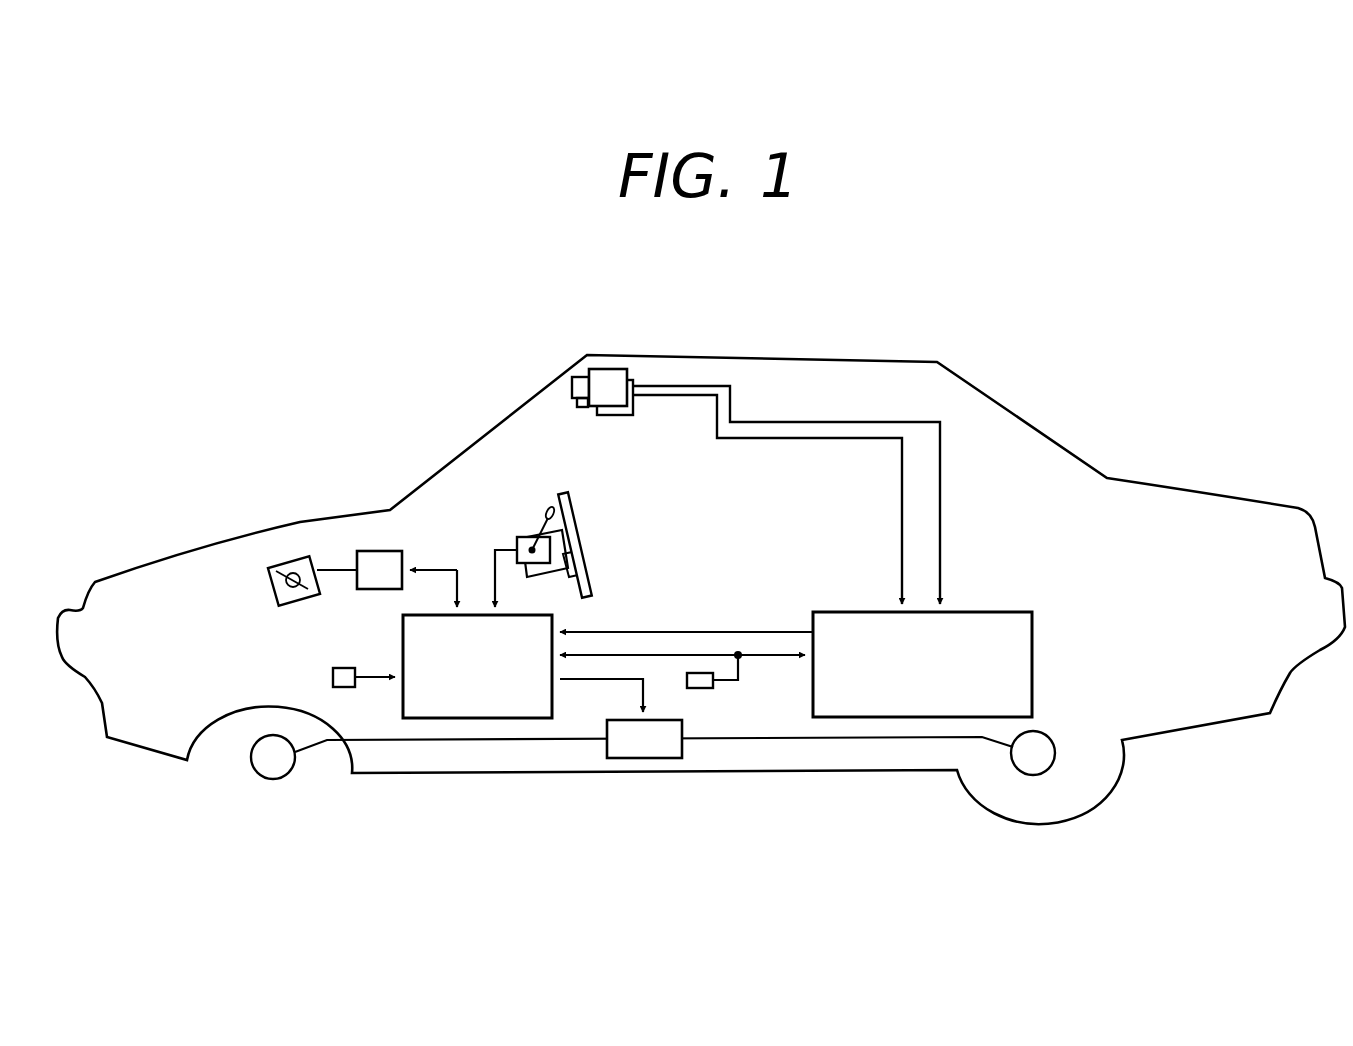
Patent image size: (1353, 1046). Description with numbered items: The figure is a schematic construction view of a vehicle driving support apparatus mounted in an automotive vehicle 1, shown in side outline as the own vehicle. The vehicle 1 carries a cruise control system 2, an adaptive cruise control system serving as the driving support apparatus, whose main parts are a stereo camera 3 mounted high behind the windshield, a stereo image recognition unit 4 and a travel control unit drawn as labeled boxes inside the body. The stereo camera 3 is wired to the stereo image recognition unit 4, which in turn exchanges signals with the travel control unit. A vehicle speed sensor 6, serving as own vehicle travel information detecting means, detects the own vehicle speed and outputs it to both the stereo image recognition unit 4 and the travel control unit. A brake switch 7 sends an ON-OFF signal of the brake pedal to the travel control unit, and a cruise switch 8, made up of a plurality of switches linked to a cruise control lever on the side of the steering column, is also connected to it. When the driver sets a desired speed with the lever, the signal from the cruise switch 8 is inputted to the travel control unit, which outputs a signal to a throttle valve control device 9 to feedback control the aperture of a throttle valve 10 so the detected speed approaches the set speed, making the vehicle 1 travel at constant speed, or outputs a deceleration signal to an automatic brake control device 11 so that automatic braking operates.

The automotive vehicle 1 is at (1074, 323).
The cruise control system 2 is at (1035, 576).
The stereo camera 3 is at (620, 425).
The stereo image recognition unit 4 is at (1034, 652).
The vehicle speed sensor 6 is at (703, 689).
The brake switch 7 is at (333, 675).
The cruise switch 8 is at (527, 535).
The throttle valve control device 9 is at (384, 551).
The throttle valve 10 is at (268, 587).
The automatic brake control device 11 is at (523, 722).